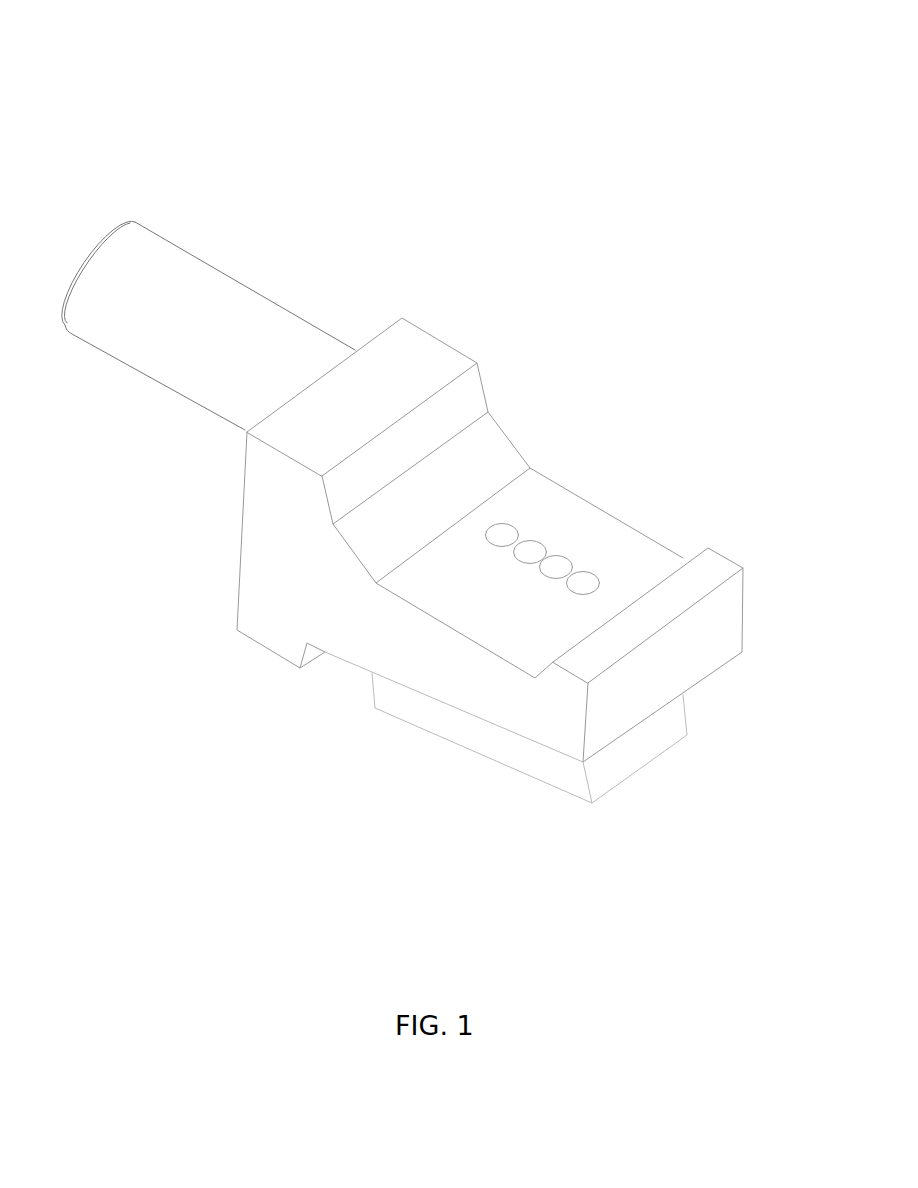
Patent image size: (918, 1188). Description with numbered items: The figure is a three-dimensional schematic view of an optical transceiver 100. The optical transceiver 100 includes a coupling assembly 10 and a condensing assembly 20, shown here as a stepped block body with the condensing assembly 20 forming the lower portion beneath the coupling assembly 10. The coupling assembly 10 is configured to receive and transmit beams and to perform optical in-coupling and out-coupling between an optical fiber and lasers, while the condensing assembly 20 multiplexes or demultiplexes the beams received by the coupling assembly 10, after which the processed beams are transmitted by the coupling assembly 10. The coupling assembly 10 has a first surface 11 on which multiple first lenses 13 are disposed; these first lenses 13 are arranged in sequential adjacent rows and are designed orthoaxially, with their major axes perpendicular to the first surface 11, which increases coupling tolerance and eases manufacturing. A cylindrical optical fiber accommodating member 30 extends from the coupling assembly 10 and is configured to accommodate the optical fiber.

The optical transceiver 100 is at (240, 118).
The coupling assembly 10 is at (634, 456).
The first surface 11 is at (630, 557).
The first lenses 13 is at (552, 567).
The condensing assembly 20 is at (534, 830).
The optical fiber accommodating member 30 is at (323, 243).